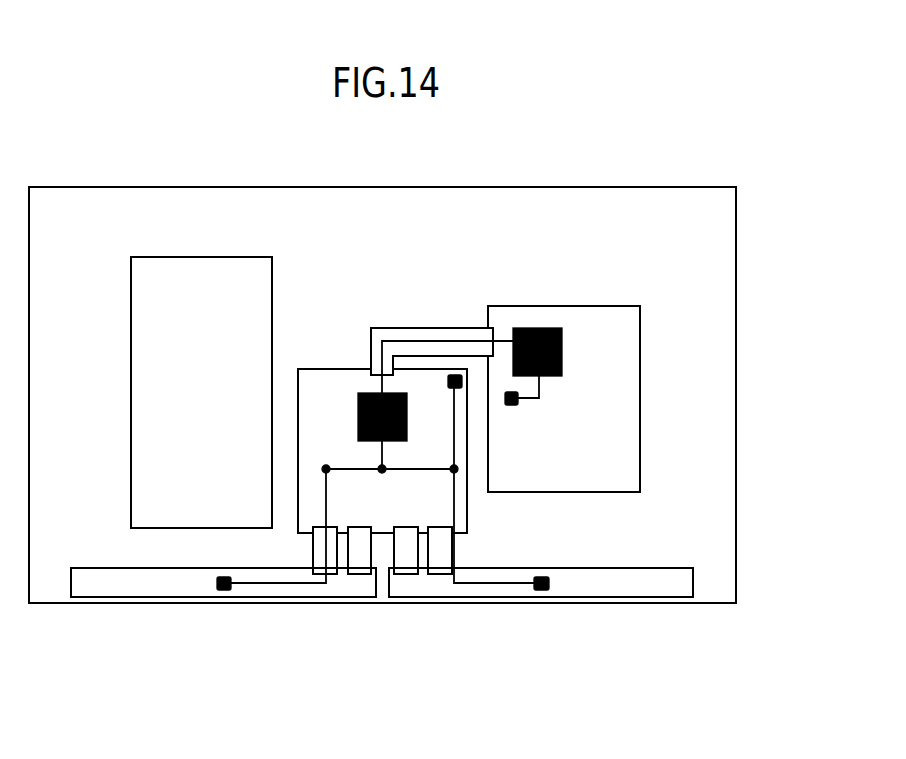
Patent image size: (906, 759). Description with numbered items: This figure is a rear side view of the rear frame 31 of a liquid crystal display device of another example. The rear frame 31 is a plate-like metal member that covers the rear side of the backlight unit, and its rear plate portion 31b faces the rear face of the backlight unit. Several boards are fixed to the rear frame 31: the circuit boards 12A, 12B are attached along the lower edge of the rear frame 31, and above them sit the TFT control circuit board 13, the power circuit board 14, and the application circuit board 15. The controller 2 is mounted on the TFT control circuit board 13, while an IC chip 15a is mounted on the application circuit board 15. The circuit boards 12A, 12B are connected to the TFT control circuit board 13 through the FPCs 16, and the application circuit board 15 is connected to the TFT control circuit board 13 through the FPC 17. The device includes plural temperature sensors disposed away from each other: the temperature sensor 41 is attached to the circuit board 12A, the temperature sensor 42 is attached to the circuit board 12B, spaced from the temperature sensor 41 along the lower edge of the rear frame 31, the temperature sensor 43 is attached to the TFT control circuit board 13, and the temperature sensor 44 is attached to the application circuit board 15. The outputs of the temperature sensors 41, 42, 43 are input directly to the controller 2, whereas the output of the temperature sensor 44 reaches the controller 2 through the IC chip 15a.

The controller 2 is at (357, 412).
The TFT control circuit board 13 is at (360, 382).
The power circuit board 14 is at (175, 286).
The application circuit board 15 is at (594, 328).
The IC chip 15a is at (540, 328).
The FPC 16 is at (362, 562).
The FPC 17 is at (412, 335).
The circuit board 12A is at (614, 585).
The circuit board 12B is at (137, 585).
The rear frame 31 is at (744, 332).
The rear plate portion 31b is at (722, 252).
The temperature sensor 41 is at (541, 590).
The temperature sensor 42 is at (224, 590).
The temperature sensor 43 is at (454, 375).
The temperature sensor 44 is at (511, 405).